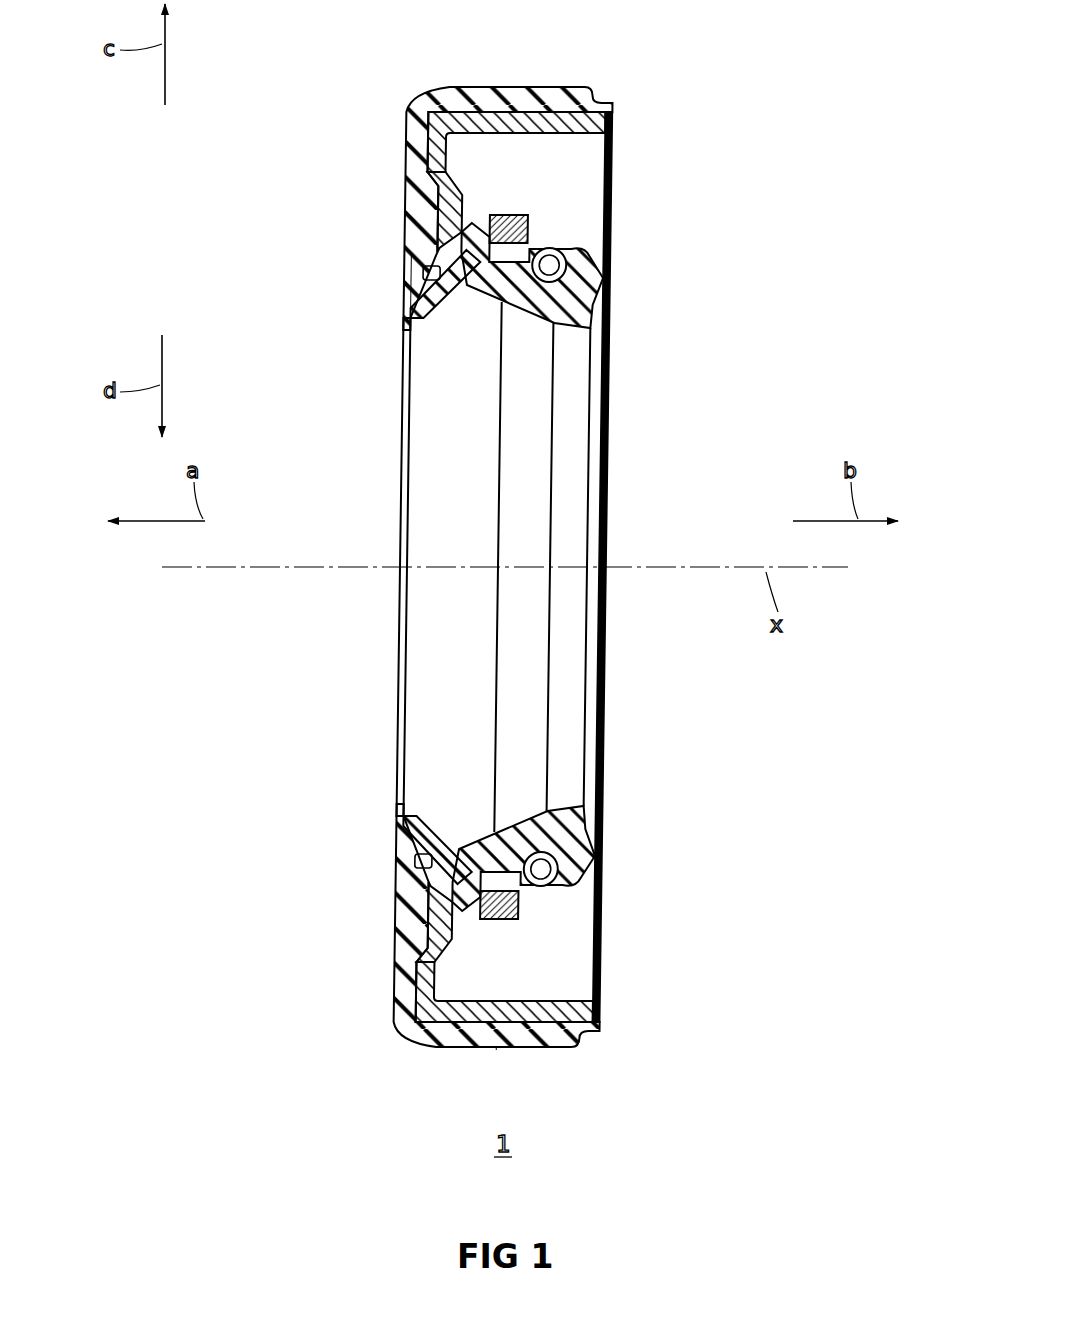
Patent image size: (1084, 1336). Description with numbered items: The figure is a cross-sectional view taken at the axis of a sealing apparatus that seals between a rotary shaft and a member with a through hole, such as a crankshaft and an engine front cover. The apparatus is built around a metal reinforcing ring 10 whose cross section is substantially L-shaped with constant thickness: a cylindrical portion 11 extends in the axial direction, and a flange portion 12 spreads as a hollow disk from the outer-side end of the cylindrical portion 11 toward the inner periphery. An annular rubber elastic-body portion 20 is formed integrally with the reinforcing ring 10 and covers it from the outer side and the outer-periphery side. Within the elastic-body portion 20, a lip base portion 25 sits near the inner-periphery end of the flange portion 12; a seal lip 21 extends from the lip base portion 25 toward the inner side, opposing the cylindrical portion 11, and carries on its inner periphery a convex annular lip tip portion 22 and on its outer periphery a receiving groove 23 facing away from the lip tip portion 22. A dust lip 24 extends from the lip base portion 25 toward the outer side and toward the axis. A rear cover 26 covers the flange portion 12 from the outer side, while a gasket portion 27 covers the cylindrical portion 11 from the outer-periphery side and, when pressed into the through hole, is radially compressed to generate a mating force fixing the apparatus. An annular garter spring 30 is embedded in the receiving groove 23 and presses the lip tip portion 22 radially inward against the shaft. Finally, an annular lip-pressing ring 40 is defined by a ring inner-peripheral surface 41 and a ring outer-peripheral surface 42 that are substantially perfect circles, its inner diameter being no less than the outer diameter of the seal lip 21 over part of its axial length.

The reinforcing ring 10 is at (562, 567).
The cylindrical portion 11 is at (572, 152).
The flange portion 12 is at (462, 208).
The elastic-body portion 20 is at (463, 533).
The seal lip 21 is at (506, 305).
The lip tip portion 22 is at (563, 309).
The receiving groove 23 is at (592, 266).
The dust lip 24 is at (425, 318).
The lip base portion 25 is at (440, 282).
The rear cover 26 is at (404, 170).
The gasket portion 27 is at (523, 86).
The garter spring 30 is at (531, 236).
The lip-pressing ring 40 is at (524, 934).
The ring inner-peripheral surface 41 is at (530, 900).
The ring outer-peripheral surface 42 is at (508, 923).